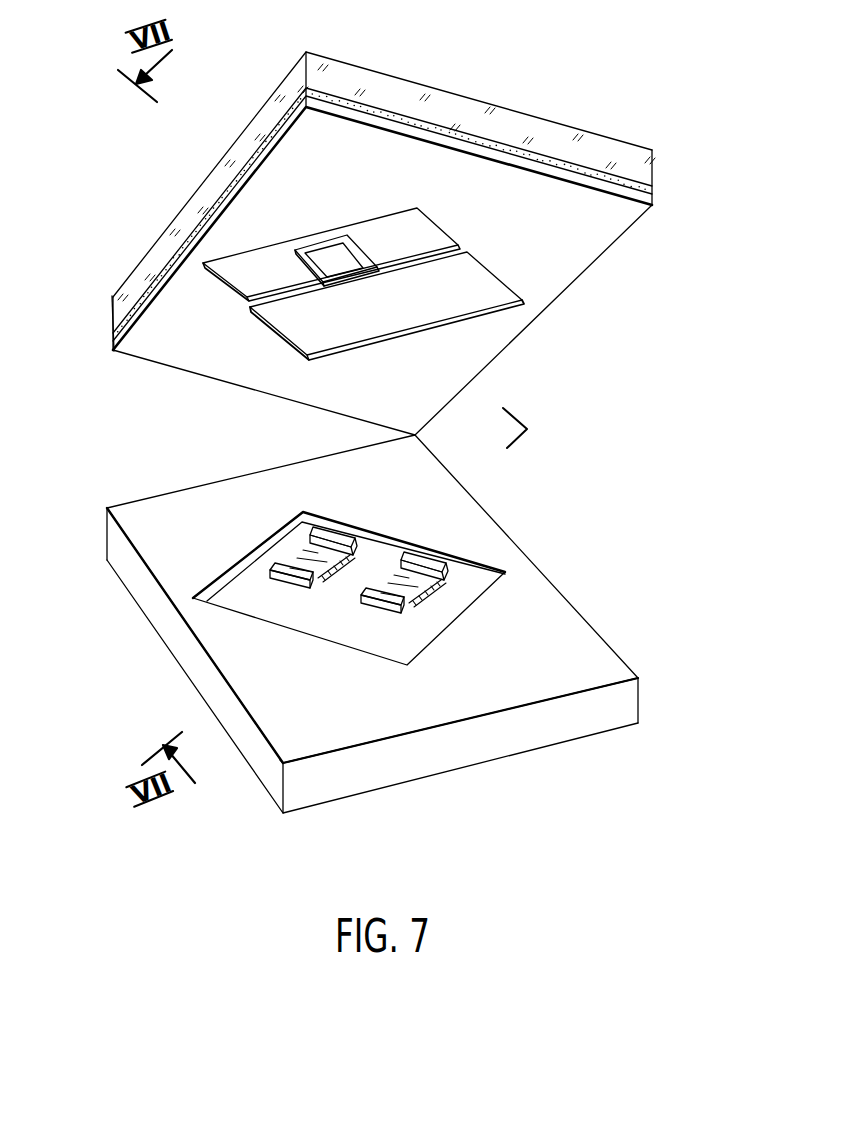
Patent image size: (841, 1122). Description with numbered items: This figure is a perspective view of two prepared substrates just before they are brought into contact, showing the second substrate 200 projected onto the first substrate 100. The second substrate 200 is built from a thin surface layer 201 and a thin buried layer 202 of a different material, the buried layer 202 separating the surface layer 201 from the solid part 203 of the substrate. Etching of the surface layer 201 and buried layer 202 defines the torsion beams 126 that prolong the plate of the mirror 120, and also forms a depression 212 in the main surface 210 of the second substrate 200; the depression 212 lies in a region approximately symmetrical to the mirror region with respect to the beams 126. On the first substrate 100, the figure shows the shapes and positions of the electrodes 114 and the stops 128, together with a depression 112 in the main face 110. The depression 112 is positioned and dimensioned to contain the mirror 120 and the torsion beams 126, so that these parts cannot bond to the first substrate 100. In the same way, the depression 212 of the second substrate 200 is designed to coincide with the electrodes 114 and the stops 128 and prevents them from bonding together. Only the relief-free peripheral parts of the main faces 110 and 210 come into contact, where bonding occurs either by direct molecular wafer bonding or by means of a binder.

The first substrate 100 is at (632, 710).
The main face of the first substrate 110 is at (602, 652).
The depression of the first substrate 112 is at (245, 597).
The electrodes 114 is at (304, 550).
The stops 128 is at (275, 563).
The second substrate 200 is at (505, 125).
The surface layer 201 is at (643, 203).
The buried layer 202 is at (637, 187).
The solid part of the substrate 203 is at (627, 147).
The main surface of the second substrate 210 is at (173, 285).
The mirror 120 is at (360, 243).
The torsion beams 126 is at (283, 292).
The depression of the second substrate 212 is at (470, 292).